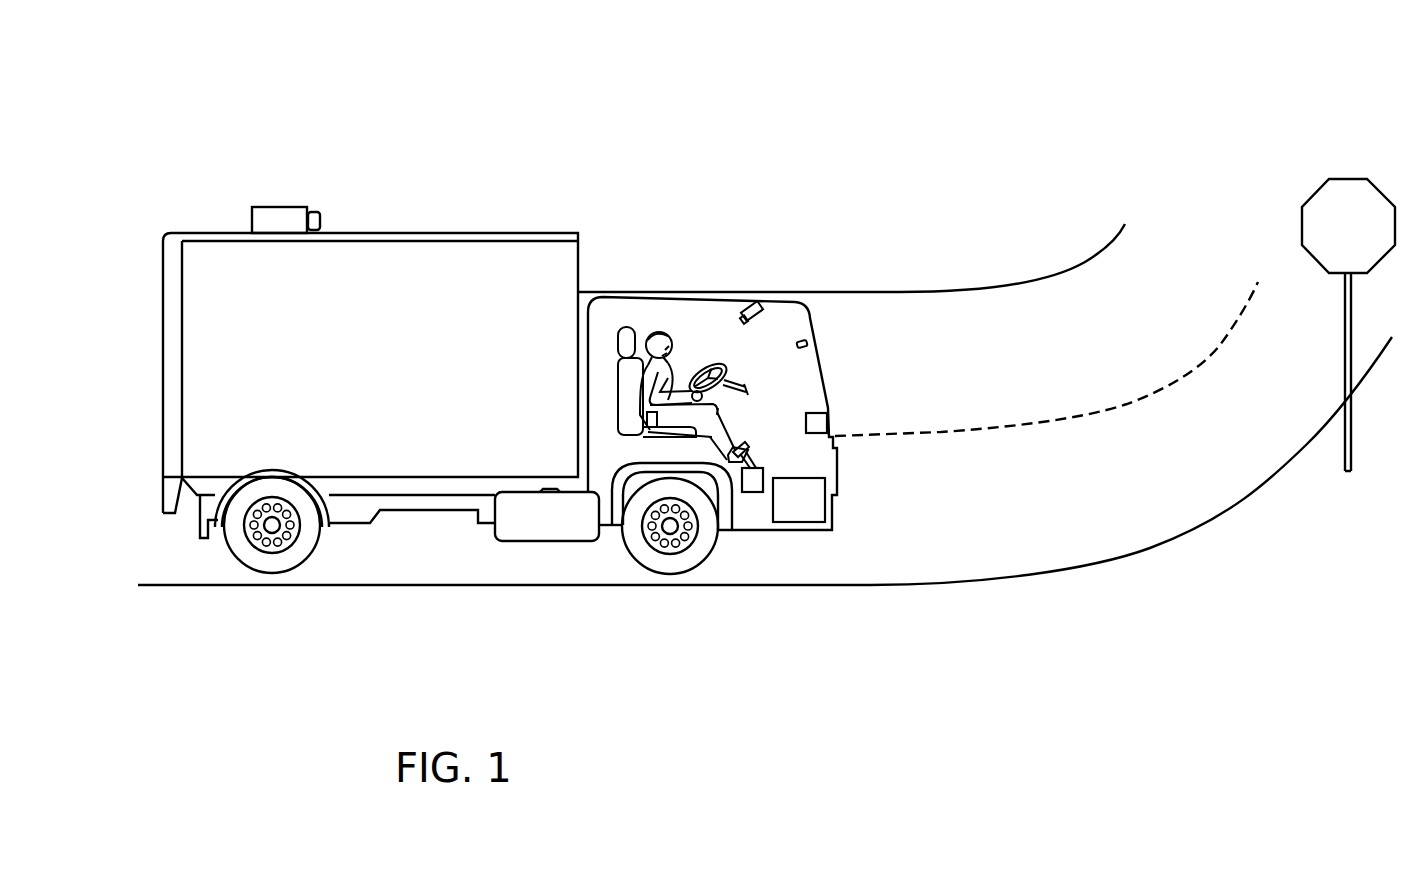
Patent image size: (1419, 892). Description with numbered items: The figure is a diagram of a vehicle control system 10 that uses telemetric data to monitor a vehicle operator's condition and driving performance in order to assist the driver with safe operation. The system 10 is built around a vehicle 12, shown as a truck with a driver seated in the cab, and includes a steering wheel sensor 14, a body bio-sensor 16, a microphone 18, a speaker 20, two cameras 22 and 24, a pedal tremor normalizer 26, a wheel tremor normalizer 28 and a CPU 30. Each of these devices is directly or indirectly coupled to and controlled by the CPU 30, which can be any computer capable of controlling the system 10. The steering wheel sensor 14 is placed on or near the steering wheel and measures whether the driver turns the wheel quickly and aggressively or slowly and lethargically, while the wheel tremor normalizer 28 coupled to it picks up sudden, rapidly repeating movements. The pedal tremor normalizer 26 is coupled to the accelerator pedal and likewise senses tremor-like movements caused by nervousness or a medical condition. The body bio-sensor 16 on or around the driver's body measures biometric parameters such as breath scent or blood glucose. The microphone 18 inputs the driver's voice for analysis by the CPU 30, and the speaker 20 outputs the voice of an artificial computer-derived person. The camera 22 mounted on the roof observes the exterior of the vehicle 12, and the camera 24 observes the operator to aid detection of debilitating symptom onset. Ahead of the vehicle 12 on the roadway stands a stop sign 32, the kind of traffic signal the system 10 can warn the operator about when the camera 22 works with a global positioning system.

The vehicle control system 10 is at (418, 167).
The vehicle 12 is at (396, 376).
The steering wheel sensor 14 is at (696, 368).
The body bio-sensor 16 is at (647, 417).
The microphone 18 is at (808, 343).
The speaker 20 is at (828, 422).
The camera 22 is at (282, 208).
The camera 24 is at (753, 302).
The pedal tremor normalizer 26 is at (748, 493).
The wheel tremor normalizer 28 is at (722, 395).
The CPU 30 is at (810, 521).
The stop sign 32 is at (1361, 275).